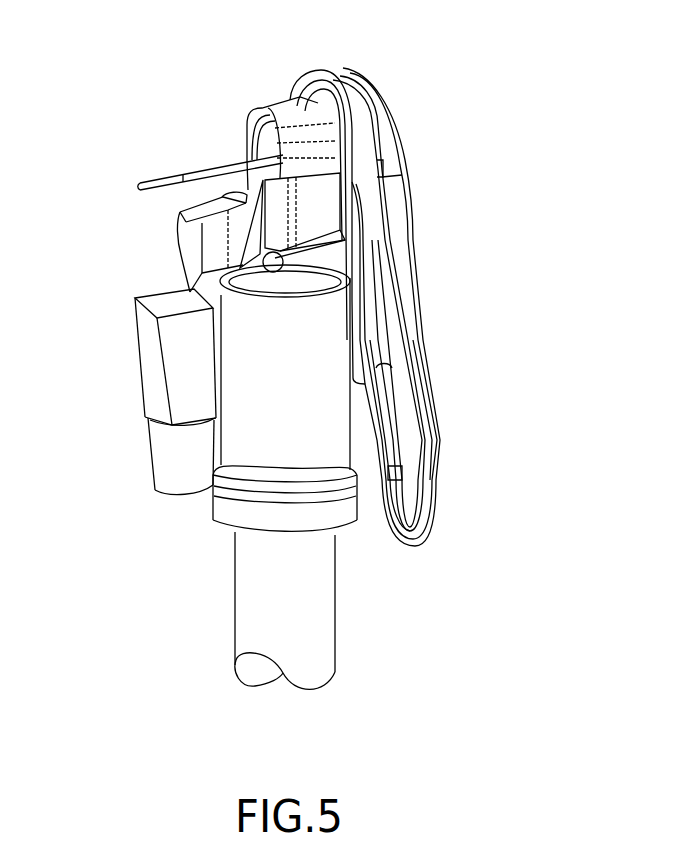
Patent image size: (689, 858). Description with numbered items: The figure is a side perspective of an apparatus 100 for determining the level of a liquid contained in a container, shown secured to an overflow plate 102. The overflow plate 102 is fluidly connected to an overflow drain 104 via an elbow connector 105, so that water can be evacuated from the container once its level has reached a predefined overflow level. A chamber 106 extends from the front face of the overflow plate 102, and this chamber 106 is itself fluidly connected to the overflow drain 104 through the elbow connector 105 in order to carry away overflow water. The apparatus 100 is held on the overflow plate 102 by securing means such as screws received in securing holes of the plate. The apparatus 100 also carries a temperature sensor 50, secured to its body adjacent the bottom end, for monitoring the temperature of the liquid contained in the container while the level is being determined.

The temperature sensor 50 is at (395, 468).
The apparatus 100 is at (422, 327).
The overflow plate 102 is at (329, 74).
The overflow drain 104 is at (267, 577).
The elbow connector 105 is at (280, 109).
The chamber 106 is at (258, 319).